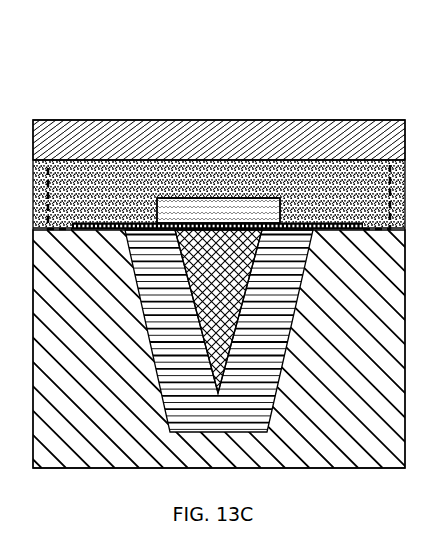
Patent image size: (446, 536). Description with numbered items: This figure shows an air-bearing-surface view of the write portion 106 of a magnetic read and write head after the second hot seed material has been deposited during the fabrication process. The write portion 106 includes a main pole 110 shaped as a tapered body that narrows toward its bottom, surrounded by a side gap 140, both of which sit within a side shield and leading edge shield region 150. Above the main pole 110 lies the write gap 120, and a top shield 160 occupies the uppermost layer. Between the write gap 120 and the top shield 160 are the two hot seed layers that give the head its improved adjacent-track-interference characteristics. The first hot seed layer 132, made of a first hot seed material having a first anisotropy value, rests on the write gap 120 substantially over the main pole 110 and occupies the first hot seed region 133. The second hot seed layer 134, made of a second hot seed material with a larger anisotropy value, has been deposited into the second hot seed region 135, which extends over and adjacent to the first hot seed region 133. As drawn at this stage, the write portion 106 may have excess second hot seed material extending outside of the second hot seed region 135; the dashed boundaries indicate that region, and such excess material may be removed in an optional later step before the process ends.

The write portion 106 is at (164, 83).
The main pole 110 is at (208, 277).
The write gap 120 is at (112, 231).
The first hot seed layer 132 is at (206, 218).
The first hot seed region 133 is at (241, 198).
The second hot seed layer 134 is at (206, 185).
The second hot seed region 135 is at (110, 183).
The side gap 140 is at (208, 422).
The side shield and leading edge shield region 150 is at (254, 463).
The top shield 160 is at (206, 150).